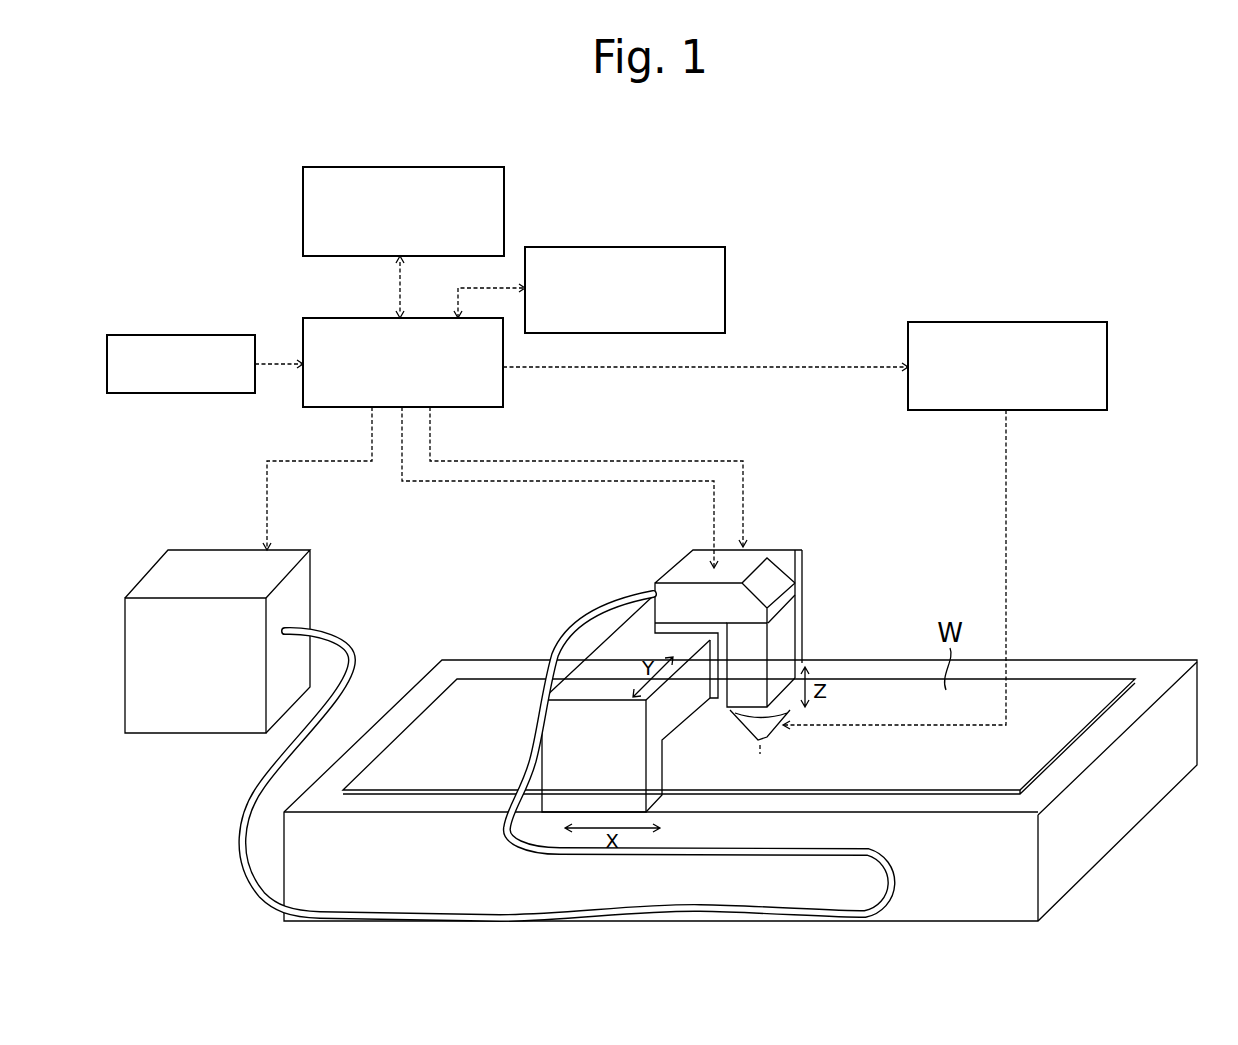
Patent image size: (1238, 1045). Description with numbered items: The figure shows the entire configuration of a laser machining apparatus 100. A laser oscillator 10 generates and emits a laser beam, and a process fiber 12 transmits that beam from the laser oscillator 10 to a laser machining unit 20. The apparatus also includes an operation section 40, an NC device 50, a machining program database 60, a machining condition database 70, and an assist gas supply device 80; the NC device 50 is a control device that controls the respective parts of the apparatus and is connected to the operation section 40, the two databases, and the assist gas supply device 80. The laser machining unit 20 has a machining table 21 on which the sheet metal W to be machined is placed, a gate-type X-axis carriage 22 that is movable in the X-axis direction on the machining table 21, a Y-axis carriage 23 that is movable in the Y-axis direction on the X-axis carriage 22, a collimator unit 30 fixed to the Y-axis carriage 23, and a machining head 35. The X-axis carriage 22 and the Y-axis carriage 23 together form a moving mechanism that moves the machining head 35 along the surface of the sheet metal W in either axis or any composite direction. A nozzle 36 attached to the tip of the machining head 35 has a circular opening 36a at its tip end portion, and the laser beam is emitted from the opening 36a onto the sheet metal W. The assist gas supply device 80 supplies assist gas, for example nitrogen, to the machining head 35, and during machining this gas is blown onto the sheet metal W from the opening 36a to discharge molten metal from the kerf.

The laser machining apparatus 100 is at (838, 239).
The laser oscillator 10 is at (234, 550).
The process fiber 12 is at (238, 860).
The laser machining unit 20 is at (890, 660).
The machining table 21 is at (1040, 662).
The X-axis carriage 22 is at (804, 578).
The Y-axis carriage 23 is at (716, 697).
The collimator unit 30 is at (655, 585).
The machining head 35 is at (790, 642).
The nozzle 36 is at (776, 733).
The opening 36a is at (762, 741).
The operation section 40 is at (194, 335).
The NC device 50 is at (346, 318).
The machining program database 60 is at (410, 167).
The machining condition database 70 is at (626, 247).
The assist gas supply device 80 is at (1009, 322).